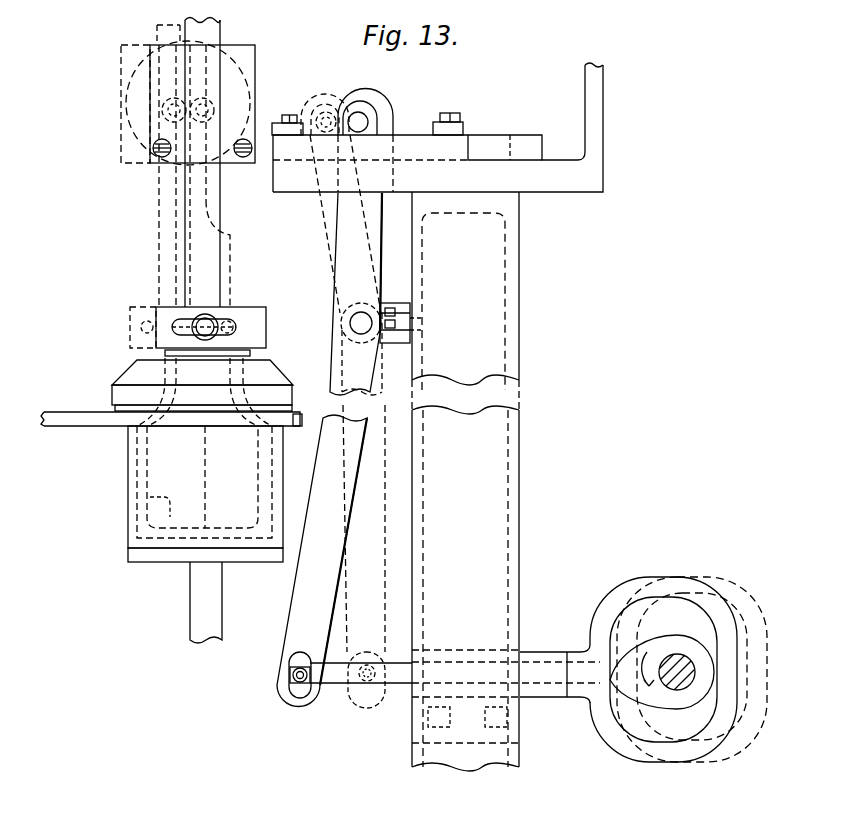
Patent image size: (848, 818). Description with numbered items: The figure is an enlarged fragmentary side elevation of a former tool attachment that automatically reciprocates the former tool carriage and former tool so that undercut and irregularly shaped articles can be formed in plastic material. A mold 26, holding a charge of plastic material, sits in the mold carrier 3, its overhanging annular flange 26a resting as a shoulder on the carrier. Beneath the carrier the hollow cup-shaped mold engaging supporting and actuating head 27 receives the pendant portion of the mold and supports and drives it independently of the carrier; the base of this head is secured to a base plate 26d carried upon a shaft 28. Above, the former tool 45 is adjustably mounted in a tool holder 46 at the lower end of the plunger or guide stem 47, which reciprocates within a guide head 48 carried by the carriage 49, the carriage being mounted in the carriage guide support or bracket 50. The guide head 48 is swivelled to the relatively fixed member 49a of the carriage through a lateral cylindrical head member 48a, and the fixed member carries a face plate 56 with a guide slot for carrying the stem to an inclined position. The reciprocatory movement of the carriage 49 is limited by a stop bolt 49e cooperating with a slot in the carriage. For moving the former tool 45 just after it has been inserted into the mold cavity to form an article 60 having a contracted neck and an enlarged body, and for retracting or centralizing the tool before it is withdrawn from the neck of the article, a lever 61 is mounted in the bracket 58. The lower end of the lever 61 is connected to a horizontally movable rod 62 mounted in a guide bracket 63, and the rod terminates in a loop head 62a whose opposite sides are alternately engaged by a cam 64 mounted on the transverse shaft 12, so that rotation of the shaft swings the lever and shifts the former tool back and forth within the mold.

The mold carrier 3 is at (88, 419).
The transverse shaft 12 is at (697, 667).
The mold 26 is at (110, 413).
The overhanging annular flange 26a is at (112, 396).
The base plate 26d is at (137, 556).
The mold engaging supporting and actuating head 27 is at (127, 478).
The shaft 28 is at (200, 607).
The former tool 45 is at (227, 400).
The tool holder 46 is at (262, 322).
The plunger or guide stem 47 is at (213, 281).
The guide head 48 is at (222, 44).
The cylindrical head member 48a is at (150, 124).
The carriage 49 is at (407, 147).
The fixed member of the carriage 49a is at (257, 100).
The stop bolt 49e is at (455, 116).
The carriage guide support or bracket 50 is at (494, 147).
The face plate 56 is at (252, 63).
The bracket 58 is at (390, 306).
The article 60 is at (250, 351).
The lever 61 is at (312, 583).
The rod 62 is at (338, 680).
The loop head 62a is at (720, 725).
The guide bracket 63 is at (540, 656).
The cam 64 is at (628, 660).